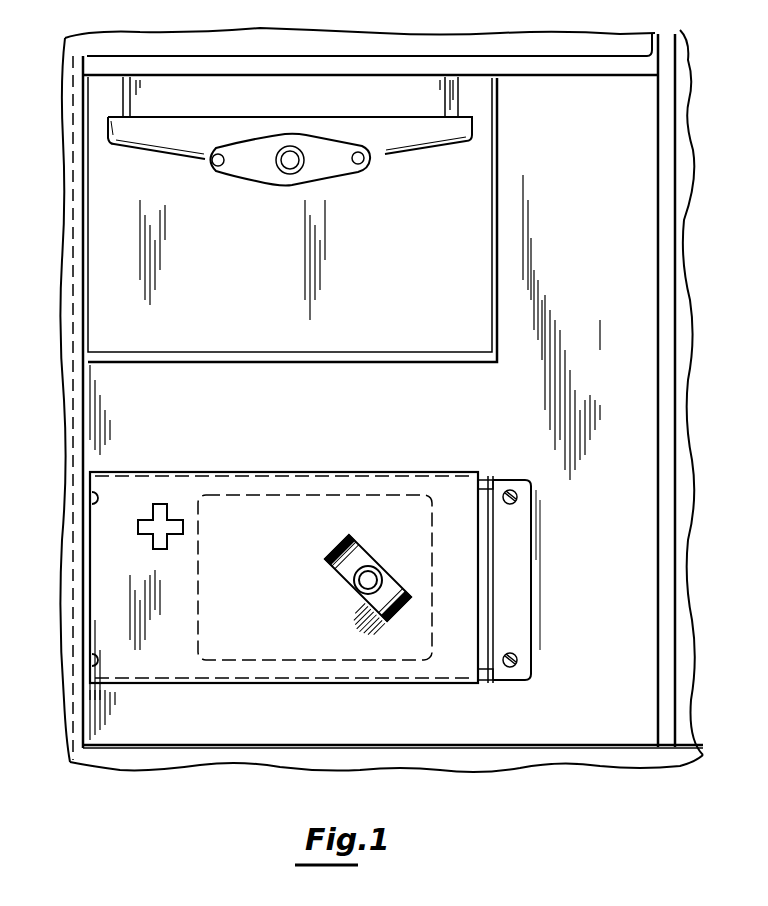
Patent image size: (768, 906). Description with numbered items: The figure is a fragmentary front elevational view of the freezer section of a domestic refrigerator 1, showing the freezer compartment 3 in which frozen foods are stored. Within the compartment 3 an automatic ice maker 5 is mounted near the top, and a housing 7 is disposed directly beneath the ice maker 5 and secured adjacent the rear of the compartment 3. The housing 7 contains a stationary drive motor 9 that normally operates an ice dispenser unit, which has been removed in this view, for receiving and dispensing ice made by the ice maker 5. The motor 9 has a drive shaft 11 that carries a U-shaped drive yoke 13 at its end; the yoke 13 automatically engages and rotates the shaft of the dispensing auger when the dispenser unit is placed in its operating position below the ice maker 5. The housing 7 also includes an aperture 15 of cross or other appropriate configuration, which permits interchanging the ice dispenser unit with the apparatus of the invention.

The domestic refrigerator 1 is at (698, 140).
The freezer compartment 3 is at (573, 258).
The automatic ice maker 5 is at (500, 164).
The housing 7 is at (228, 472).
The stationary drive motor 9 is at (433, 580).
The drive shaft 11 is at (366, 566).
The U-shaped drive yoke 13 is at (332, 553).
The aperture 15 is at (150, 528).